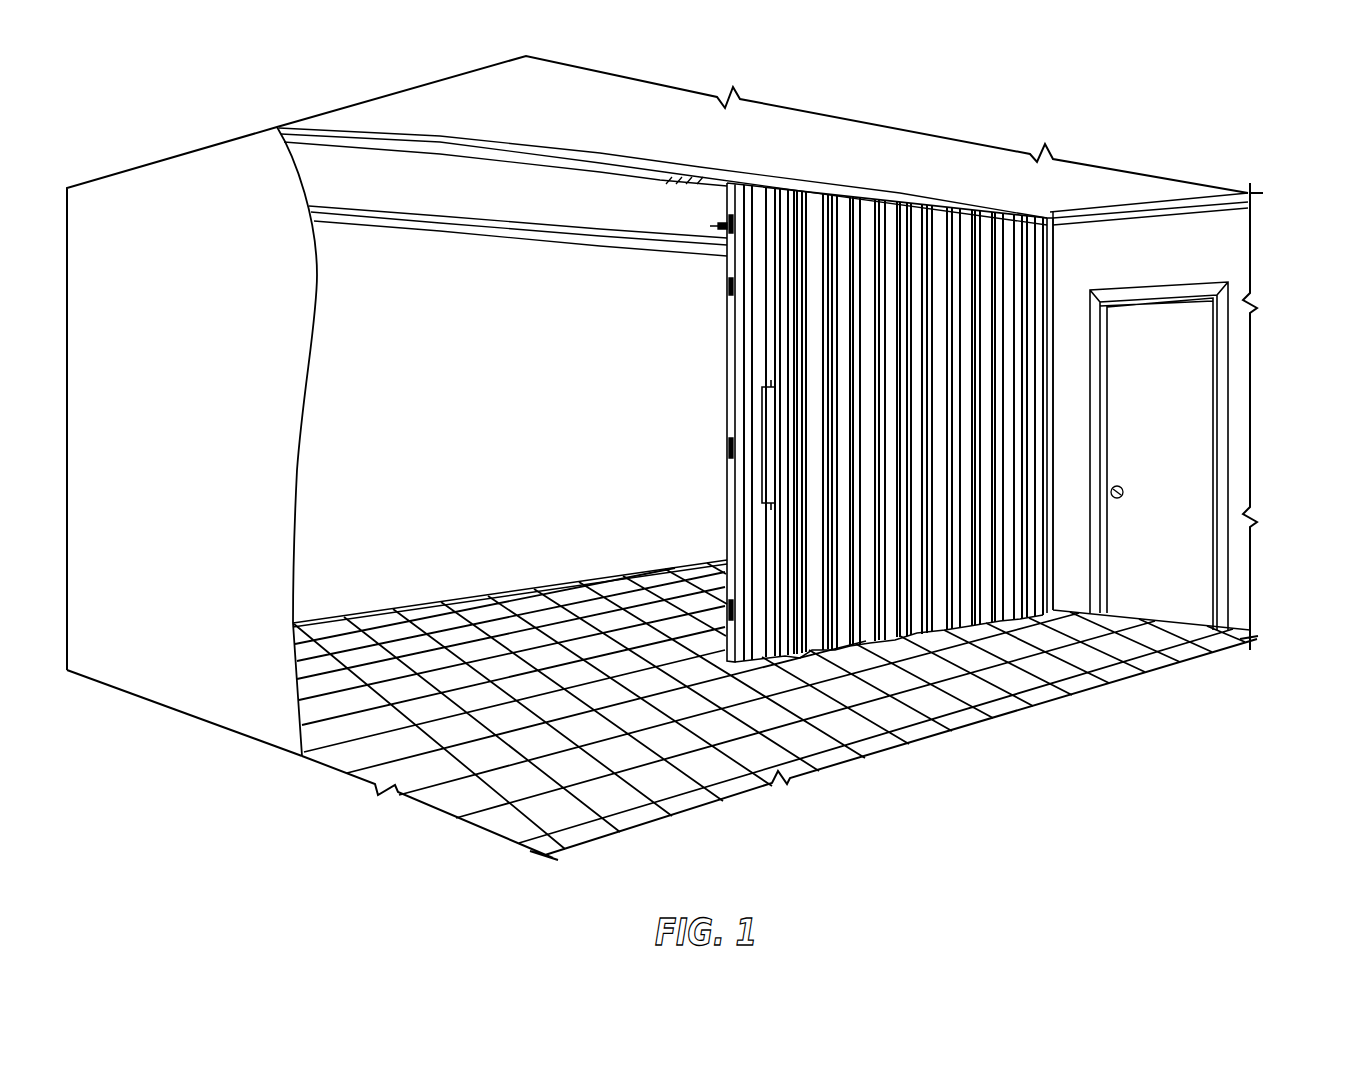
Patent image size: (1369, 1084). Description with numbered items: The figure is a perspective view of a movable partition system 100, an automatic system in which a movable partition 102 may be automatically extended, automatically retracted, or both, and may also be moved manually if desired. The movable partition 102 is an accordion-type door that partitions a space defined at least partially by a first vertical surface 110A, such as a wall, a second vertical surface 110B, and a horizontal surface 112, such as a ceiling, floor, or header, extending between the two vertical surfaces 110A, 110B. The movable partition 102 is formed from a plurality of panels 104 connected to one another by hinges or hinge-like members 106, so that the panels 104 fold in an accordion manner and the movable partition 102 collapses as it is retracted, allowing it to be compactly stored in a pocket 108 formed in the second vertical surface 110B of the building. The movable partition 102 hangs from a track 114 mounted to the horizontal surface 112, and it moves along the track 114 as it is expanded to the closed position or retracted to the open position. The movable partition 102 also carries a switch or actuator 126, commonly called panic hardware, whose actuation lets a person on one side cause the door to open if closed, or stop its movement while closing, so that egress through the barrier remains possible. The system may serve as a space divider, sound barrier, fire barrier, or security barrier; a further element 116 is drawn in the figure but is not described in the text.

The movable partition system 100 is at (948, 158).
The movable partition 102 is at (726, 283).
The panels 104 is at (942, 623).
The hinges or hinge-like members 106 is at (855, 653).
The pocket 108 is at (1065, 427).
The first vertical surface 110A is at (205, 417).
The second vertical surface 110B is at (1183, 262).
The horizontal surface 112 is at (463, 200).
The track 114 is at (683, 176).
The floor track 116 is at (733, 657).
The switch or actuator 126 is at (763, 400).